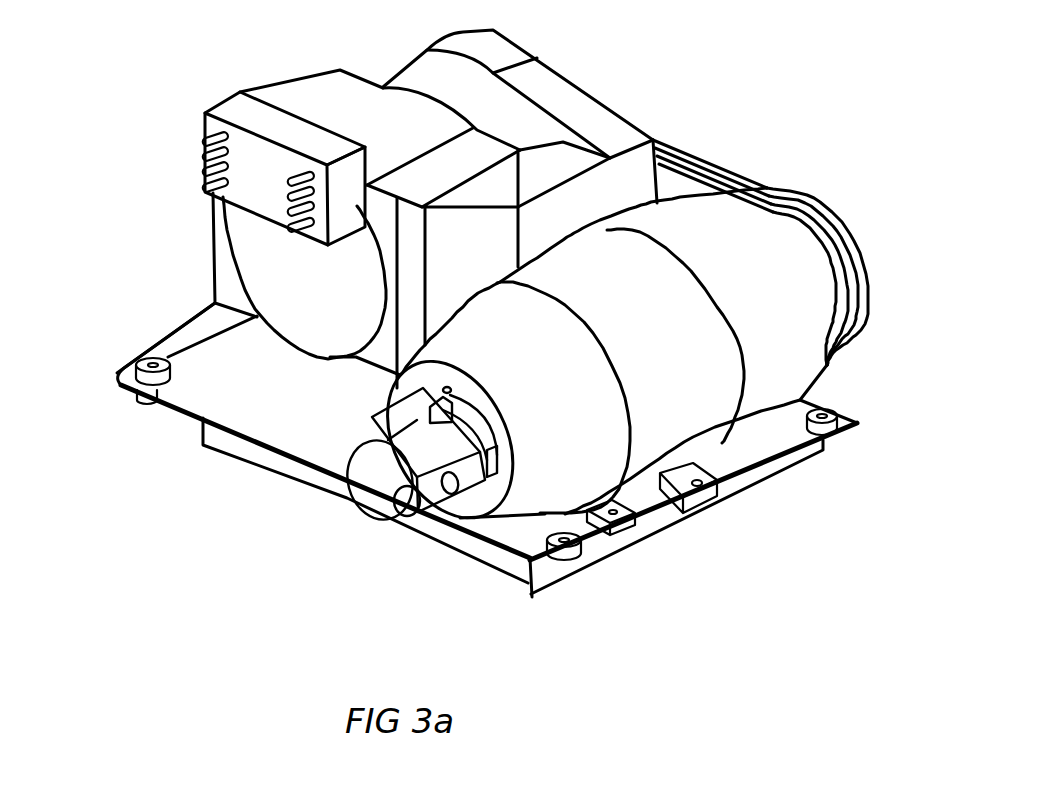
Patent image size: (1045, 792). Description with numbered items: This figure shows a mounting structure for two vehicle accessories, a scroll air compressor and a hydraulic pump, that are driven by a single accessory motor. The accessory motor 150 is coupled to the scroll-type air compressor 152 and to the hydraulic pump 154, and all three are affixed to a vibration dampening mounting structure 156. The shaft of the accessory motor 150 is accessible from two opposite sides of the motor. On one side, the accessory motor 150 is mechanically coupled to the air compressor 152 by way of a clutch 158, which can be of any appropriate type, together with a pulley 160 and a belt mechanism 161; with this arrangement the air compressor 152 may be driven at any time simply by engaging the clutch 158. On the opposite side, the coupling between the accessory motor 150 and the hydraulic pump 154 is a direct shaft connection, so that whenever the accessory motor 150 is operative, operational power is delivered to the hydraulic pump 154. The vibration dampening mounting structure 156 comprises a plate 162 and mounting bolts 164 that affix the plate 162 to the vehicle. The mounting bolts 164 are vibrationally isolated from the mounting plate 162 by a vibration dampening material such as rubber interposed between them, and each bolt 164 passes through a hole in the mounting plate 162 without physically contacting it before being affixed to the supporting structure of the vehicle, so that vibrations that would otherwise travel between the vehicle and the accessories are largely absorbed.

The accessory motor 150 is at (690, 437).
The scroll-type air compressor 152 is at (313, 94).
The hydraulic pump 154 is at (392, 518).
The vibration dampening mounting structure 156 is at (178, 427).
The clutch 158 is at (850, 220).
The pulley 160 is at (807, 192).
The belt mechanism 161 is at (690, 148).
The mounting plate 162 is at (310, 433).
The mounting bolts 164 is at (140, 360).